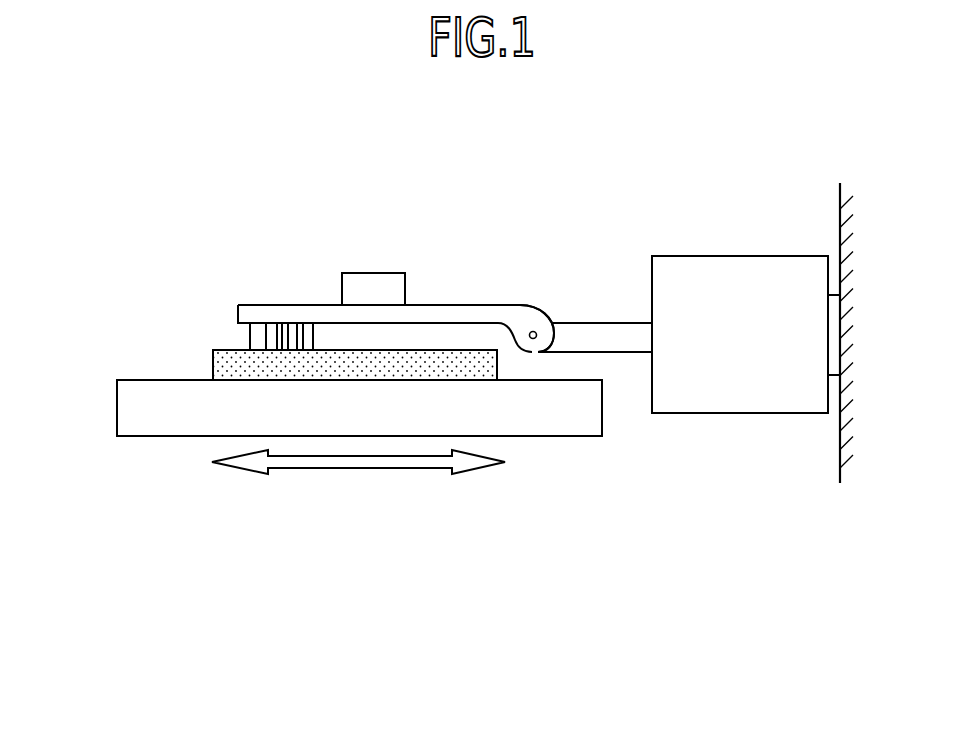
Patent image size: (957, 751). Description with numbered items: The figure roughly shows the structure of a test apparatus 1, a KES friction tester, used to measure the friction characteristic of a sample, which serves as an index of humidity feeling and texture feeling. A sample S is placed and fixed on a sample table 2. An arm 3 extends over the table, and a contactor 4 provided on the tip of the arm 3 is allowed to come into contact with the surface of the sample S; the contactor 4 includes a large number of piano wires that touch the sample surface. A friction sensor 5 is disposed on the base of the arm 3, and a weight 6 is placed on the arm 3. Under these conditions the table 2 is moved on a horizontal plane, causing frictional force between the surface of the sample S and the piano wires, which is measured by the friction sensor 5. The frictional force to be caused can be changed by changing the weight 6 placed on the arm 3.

The test apparatus 1 is at (302, 195).
The sample table 2 is at (117, 410).
The sample S is at (213, 372).
The arm 3 is at (473, 305).
The contactor 4 is at (272, 305).
The friction sensor 5 is at (728, 256).
The weight 6 is at (373, 273).